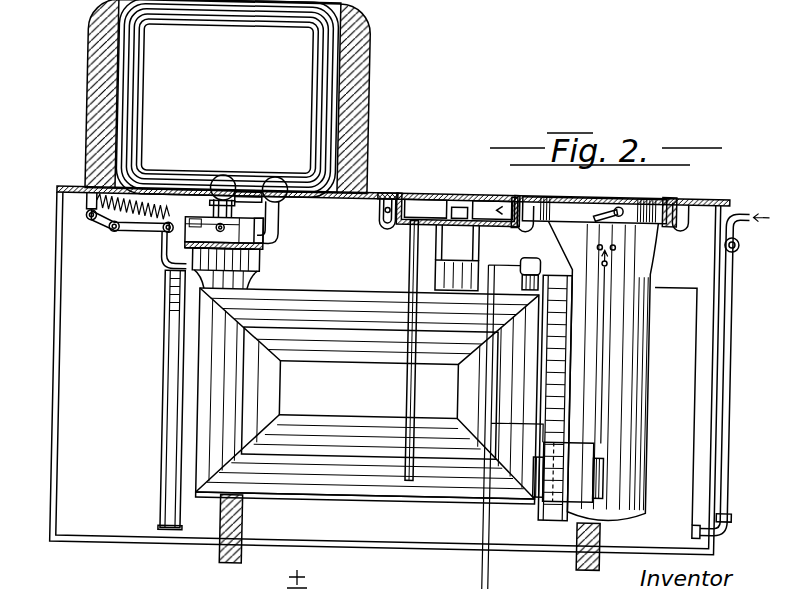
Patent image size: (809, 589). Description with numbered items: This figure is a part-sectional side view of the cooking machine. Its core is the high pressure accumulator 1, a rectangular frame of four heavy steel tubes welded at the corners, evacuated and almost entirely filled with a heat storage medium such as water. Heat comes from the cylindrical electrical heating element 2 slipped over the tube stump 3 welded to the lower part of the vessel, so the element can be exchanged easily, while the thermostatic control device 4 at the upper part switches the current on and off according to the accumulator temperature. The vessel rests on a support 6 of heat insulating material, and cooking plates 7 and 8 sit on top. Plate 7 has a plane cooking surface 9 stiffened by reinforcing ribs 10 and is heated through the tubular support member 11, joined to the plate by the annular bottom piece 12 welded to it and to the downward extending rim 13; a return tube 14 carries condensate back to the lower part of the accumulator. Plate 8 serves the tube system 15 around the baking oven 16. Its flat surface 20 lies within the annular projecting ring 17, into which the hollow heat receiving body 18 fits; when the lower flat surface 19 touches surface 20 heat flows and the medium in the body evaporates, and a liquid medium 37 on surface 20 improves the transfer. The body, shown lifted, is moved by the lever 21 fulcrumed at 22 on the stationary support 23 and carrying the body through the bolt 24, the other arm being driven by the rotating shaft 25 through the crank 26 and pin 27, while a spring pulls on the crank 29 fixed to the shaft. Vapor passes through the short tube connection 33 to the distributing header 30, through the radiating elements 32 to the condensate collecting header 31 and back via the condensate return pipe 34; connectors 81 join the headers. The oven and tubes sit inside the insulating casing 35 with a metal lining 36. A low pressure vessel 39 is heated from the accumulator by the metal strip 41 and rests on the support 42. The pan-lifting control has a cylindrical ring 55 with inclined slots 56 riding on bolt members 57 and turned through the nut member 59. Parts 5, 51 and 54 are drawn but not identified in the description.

The high pressure accumulator 1 is at (367, 396).
The cylindrical electrical heating element 2 is at (568, 472).
The tube stump 3 is at (606, 469).
The thermostatic control device 4 is at (559, 240).
The thermostat contacts 5 is at (624, 241).
The support 6 is at (226, 549).
The cooking plate 7 is at (400, 190).
The cooking plate 8 is at (261, 254).
The cooking surface 9 is at (455, 187).
The reinforcing ribs 10 is at (487, 196).
The tubular support member 11 is at (478, 230).
The annular bottom piece 12 is at (500, 213).
The downward extending rim 13 is at (515, 200).
The return tube 14 is at (411, 255).
The tube system 15 is at (324, 72).
The baking oven 16 is at (227, 98).
The annular projecting ring 17 is at (268, 248).
The hollow heat receiving body 18 is at (280, 216).
The lower flat surface 19 is at (268, 251).
The flat surface 20 is at (243, 283).
The lever 21 is at (147, 226).
The fulcrum 22 is at (169, 231).
The stationary support 23 is at (172, 268).
The bolt 24 is at (240, 221).
The rotating shaft 25 is at (90, 220).
The crank 26 is at (113, 230).
The pin 27 is at (121, 226).
The crank 29 is at (86, 197).
The distributing header 30 is at (223, 186).
The condensate collecting header 31 is at (275, 187).
The radiating elements 32 is at (126, 110).
The short tube connection 33 is at (208, 195).
The condensate return pipe 34 is at (271, 241).
The casing 35 is at (350, 111).
The metal lining 36 is at (143, 130).
The medium 37 is at (251, 271).
The low pressure vessel 39 is at (648, 352).
The metal strip 41 is at (550, 359).
The support 42 is at (585, 542).
The pipe 51 is at (738, 391).
The valve 54 is at (741, 229).
The cylindrical ring 55 is at (655, 193).
The inclined slots 56 is at (598, 200).
The bolt members 57 is at (619, 195).
The nut member 59 is at (680, 186).
The connectors 81 is at (246, 186).